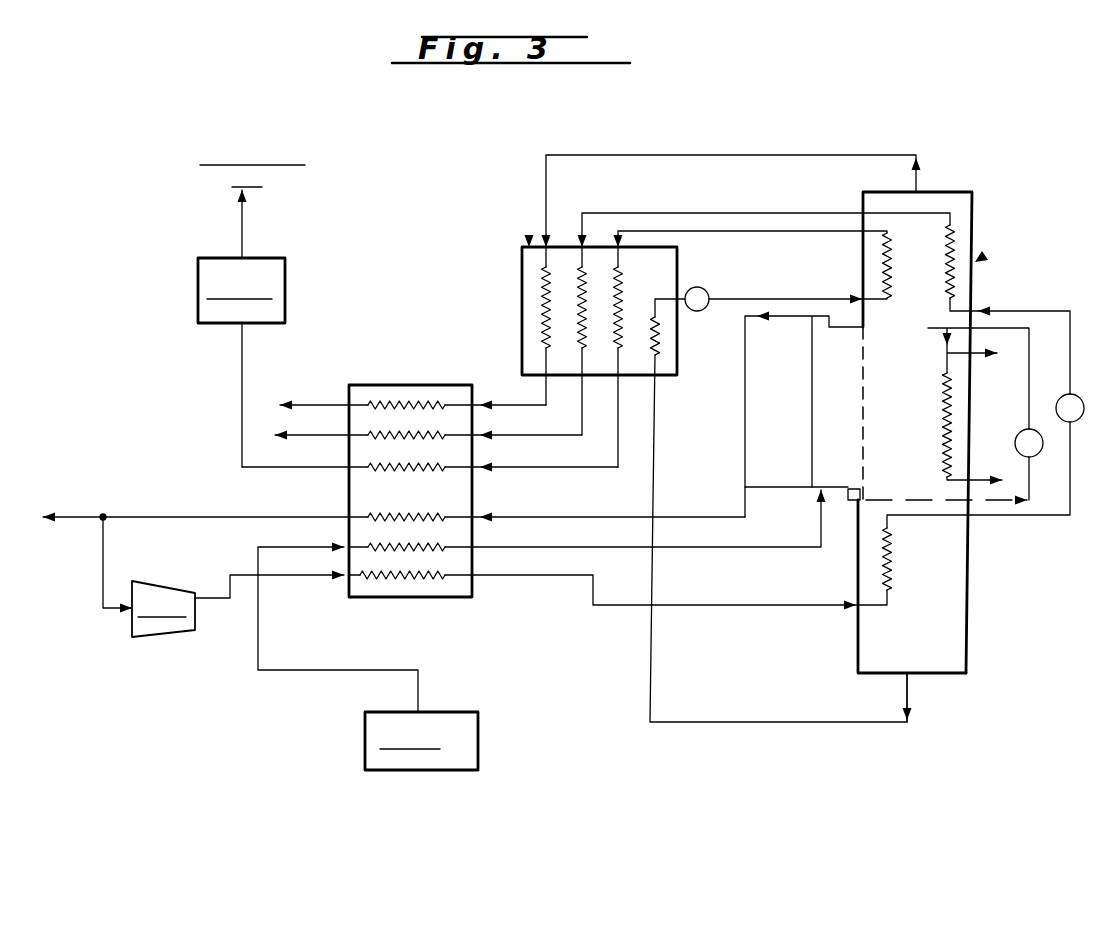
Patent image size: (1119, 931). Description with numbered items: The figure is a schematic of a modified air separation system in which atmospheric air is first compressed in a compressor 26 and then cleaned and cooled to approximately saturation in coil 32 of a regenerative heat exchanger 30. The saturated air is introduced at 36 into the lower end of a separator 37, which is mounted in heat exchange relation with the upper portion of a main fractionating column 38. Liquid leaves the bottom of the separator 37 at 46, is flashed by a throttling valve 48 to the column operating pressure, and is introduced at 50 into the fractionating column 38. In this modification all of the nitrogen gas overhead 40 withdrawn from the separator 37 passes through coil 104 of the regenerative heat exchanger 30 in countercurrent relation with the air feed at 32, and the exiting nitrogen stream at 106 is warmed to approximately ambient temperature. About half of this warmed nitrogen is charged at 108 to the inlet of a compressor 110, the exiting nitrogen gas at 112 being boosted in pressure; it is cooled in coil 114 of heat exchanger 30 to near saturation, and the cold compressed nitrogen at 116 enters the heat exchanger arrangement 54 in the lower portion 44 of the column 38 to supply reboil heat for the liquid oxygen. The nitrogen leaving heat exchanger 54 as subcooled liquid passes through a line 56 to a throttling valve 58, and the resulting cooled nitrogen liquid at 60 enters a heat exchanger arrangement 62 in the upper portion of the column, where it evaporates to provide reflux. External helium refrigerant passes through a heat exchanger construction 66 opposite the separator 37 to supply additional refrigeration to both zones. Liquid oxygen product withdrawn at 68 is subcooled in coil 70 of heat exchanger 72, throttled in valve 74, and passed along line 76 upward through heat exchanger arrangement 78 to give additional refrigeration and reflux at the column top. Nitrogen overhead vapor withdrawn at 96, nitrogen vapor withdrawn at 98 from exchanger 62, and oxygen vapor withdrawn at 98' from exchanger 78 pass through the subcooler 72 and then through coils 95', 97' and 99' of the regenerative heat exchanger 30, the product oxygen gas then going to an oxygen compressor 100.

The compressor 26 is at (478, 716).
The regenerative heat exchanger 30 is at (402, 385).
The coil 32 is at (430, 551).
The air feed inlet 36 is at (821, 524).
The separator 37 is at (812, 398).
The main fractionating column 38 is at (978, 263).
The nitrogen gas overhead 40 is at (785, 317).
The lower portion of fractionating column 44 is at (970, 580).
The bottom withdrawal of initial separation stage 46 is at (854, 500).
The throttling valve 48 is at (1022, 434).
The flashed fluid inlet 50 is at (947, 333).
The heat exchanger construction 54 is at (895, 581).
The liquid conduit 56 is at (1012, 515).
The throttling valve 58 is at (1070, 418).
The cooled nitrogen liquid 60 is at (1057, 314).
The heat exchanger arrangement 62 is at (972, 274).
The heat exchanger construction 66 is at (945, 421).
The oxygen product withdrawal 68 is at (877, 722).
The coil 70 is at (662, 342).
The heat exchanger 72 is at (529, 238).
The throttling valve 74 is at (704, 291).
The conduit to column 76 is at (807, 292).
The heat exchanger arrangement 78 is at (880, 268).
The coil 95' is at (413, 380).
The nitrogen overhead vapor withdrawal 96 is at (838, 162).
The coil 97' is at (428, 395).
The nitrogen vapor withdrawal 98 is at (752, 216).
The oxygen vapor withdrawal 98' is at (766, 216).
The coil 99' is at (430, 484).
The oxygen compressor 100 is at (285, 272).
The coil 104 is at (440, 517).
The exiting nitrogen stream 106 is at (301, 516).
The compressor inlet charge 108 is at (103, 560).
The compressor 110 is at (143, 638).
The exiting nitrogen gas 112 is at (224, 599).
The coil 114 is at (380, 578).
The cold compressed nitrogen 116 is at (633, 606).